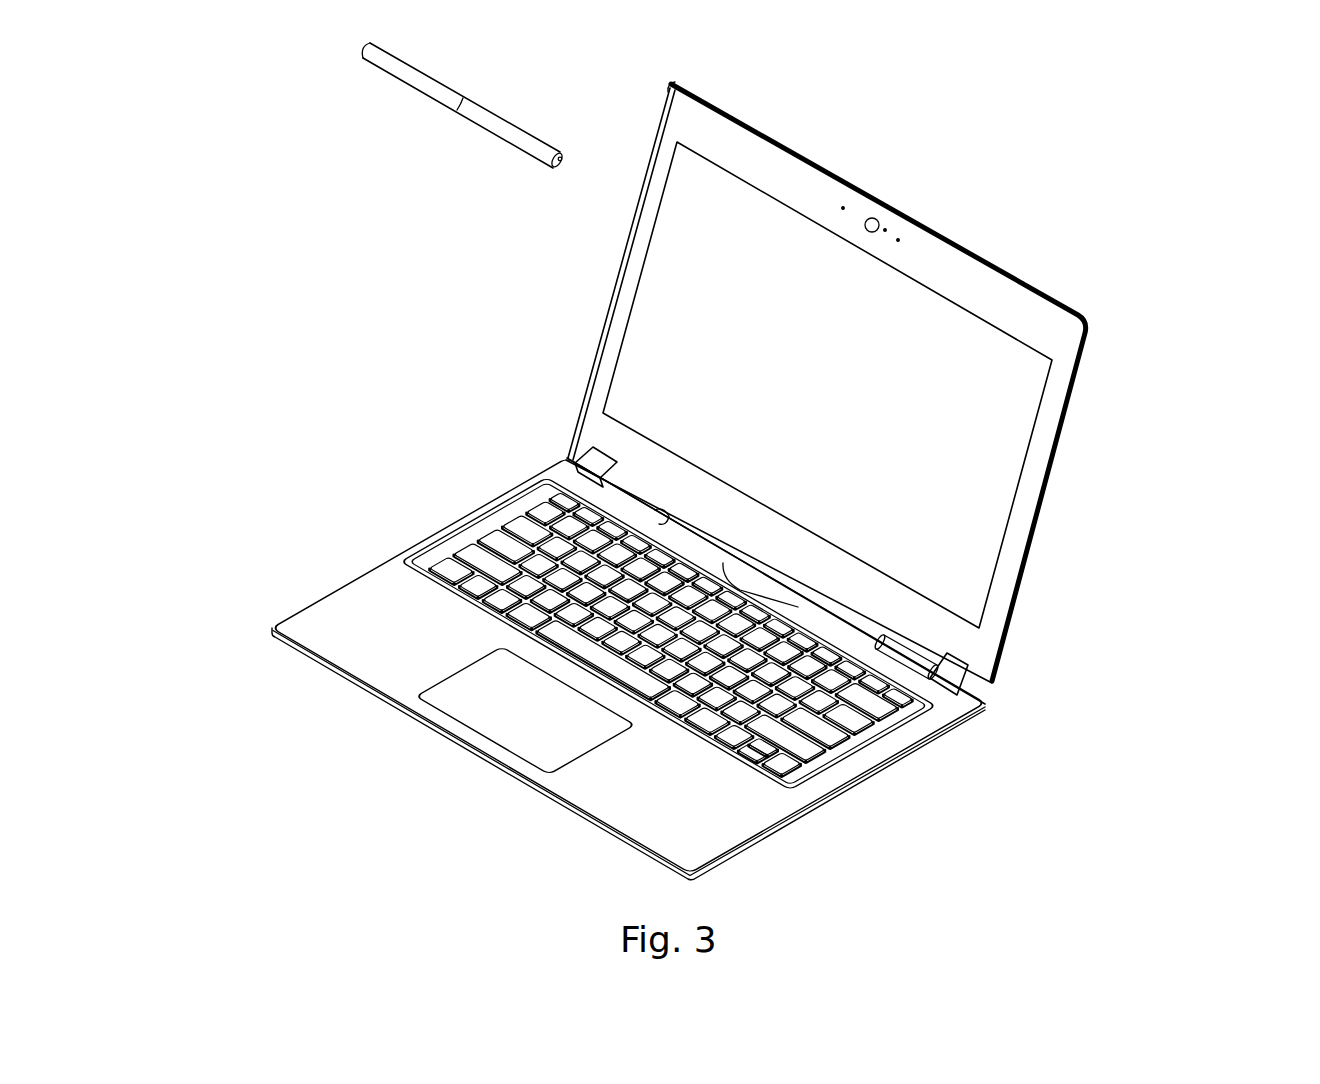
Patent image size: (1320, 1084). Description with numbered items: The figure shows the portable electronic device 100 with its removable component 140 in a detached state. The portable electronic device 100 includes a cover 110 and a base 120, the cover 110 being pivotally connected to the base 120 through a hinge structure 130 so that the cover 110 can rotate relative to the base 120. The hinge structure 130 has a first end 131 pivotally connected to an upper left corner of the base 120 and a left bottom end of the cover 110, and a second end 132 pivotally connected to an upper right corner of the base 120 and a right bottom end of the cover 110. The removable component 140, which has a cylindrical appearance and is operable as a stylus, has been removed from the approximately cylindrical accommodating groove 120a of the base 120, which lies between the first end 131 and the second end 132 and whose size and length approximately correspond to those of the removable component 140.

The portable electronic device 100 is at (242, 75).
The cover 110 is at (985, 283).
The base 120 is at (735, 820).
The accommodating groove 120a is at (697, 532).
The hinge structure 130 is at (1196, 153).
The first end 131 is at (577, 445).
The second end 132 is at (971, 685).
The removable component 140 is at (503, 124).